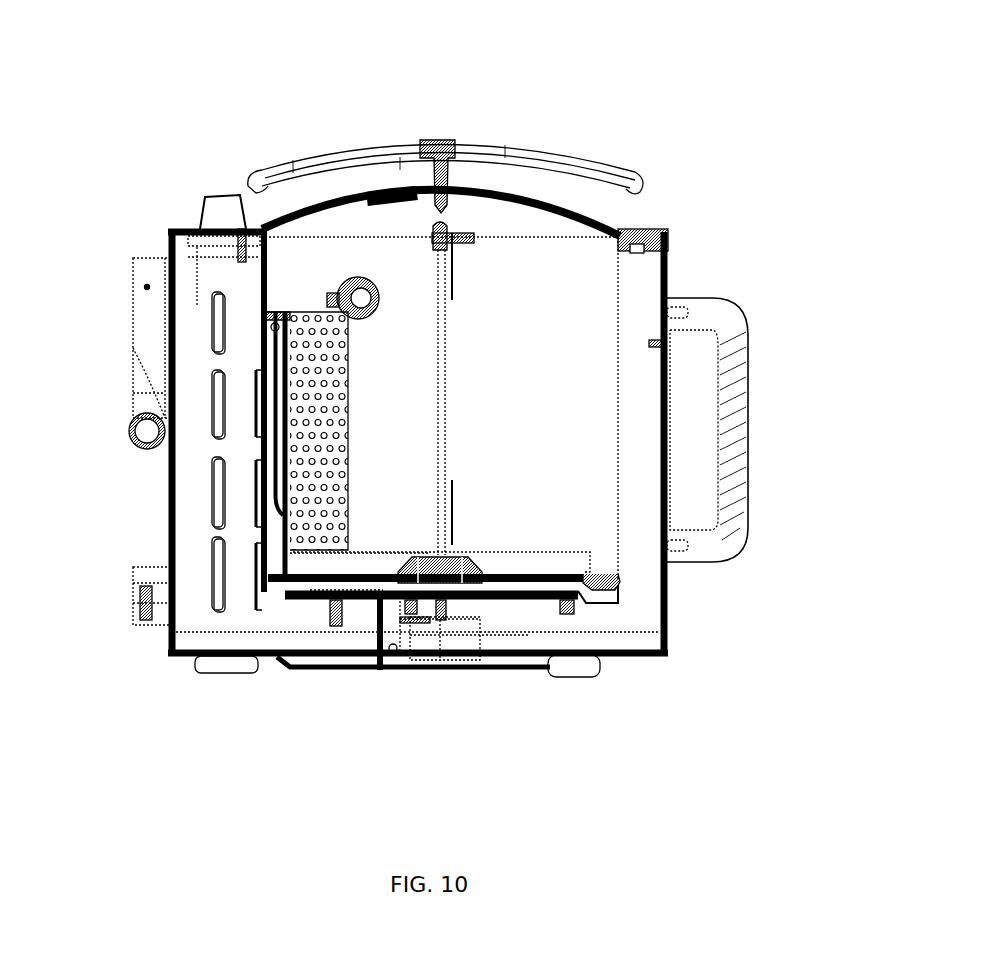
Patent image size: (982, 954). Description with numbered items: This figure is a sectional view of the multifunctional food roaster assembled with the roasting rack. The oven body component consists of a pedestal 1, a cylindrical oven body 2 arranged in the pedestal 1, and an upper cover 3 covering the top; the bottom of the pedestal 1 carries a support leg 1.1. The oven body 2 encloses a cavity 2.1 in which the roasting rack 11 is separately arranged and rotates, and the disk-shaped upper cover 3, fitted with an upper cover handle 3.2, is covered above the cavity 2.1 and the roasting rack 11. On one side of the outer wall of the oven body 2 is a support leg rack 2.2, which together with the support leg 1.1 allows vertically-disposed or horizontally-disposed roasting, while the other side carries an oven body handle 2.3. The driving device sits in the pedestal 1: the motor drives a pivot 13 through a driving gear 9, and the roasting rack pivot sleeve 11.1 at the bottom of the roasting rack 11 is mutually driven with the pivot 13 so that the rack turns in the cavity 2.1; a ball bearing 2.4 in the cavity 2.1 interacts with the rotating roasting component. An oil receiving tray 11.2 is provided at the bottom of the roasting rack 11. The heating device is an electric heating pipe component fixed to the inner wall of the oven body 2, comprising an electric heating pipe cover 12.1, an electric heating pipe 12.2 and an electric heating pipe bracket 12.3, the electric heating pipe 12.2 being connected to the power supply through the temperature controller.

The pedestal 1 is at (330, 669).
The support leg 1.1 is at (240, 662).
The oven body 2 is at (643, 468).
The cavity 2.1 is at (258, 277).
The support leg rack 2.2 is at (152, 592).
The oven body handle 2.3 is at (717, 300).
The ball bearing 2.4 is at (337, 291).
The upper cover 3 is at (590, 213).
The upper cover handle 3.2 is at (378, 150).
The driving gear 9 is at (463, 617).
The roasting rack 11 is at (437, 272).
The roasting rack pivot sleeve 11.1 is at (498, 600).
The oil receiving tray 11.2 is at (621, 582).
The electric heating pipe cover 12.1 is at (284, 484).
The electric heating pipe 12.2 is at (286, 396).
The electric heating pipe bracket 12.3 is at (263, 351).
The pivot 13 is at (440, 619).